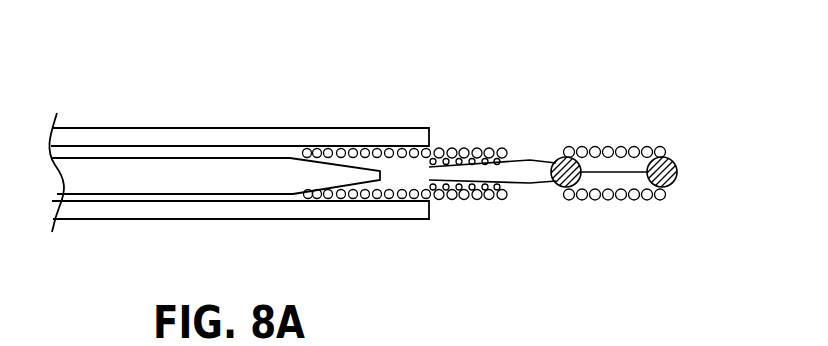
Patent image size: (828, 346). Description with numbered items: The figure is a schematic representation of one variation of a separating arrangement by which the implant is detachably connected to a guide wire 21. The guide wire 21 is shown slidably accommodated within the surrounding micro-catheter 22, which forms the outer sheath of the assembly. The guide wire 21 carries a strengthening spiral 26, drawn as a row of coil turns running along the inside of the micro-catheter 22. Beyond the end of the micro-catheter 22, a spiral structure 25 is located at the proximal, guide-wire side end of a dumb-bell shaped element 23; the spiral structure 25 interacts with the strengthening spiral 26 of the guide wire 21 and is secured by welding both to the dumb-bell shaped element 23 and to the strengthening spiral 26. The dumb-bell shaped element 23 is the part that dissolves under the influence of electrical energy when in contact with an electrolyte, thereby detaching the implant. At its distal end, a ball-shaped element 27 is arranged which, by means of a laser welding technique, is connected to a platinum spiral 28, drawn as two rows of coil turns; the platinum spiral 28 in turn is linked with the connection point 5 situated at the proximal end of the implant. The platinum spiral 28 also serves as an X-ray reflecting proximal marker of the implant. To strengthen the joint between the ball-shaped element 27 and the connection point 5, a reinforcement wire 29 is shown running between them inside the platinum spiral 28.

The micro-catheter 22 is at (163, 133).
The guide wire 21 is at (207, 180).
The strengthening spiral 26 is at (352, 192).
The spiral structure 25 is at (502, 196).
The dumb-bell shaped element 23 is at (532, 176).
The ball-shaped element 27 is at (555, 160).
The connection point 5 is at (668, 160).
The reinforcement wire 29 is at (607, 165).
The platinum spiral 28 is at (613, 200).